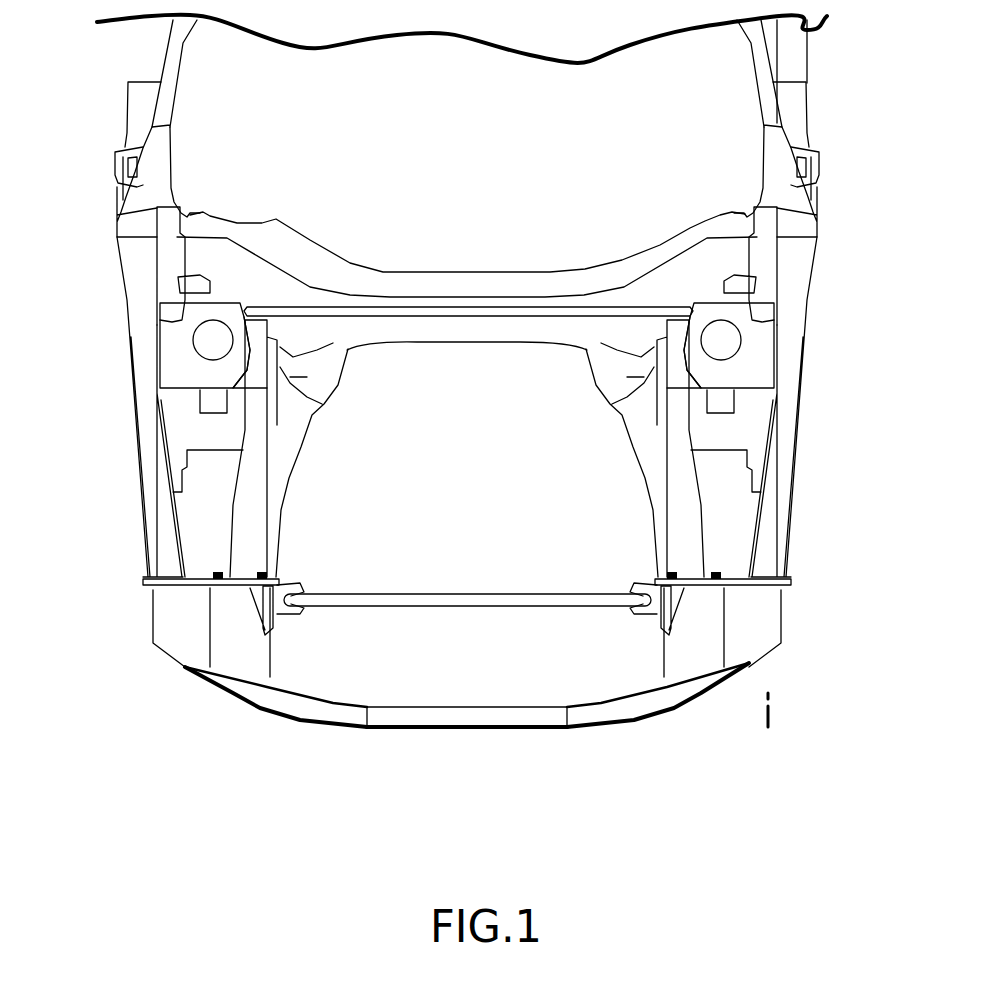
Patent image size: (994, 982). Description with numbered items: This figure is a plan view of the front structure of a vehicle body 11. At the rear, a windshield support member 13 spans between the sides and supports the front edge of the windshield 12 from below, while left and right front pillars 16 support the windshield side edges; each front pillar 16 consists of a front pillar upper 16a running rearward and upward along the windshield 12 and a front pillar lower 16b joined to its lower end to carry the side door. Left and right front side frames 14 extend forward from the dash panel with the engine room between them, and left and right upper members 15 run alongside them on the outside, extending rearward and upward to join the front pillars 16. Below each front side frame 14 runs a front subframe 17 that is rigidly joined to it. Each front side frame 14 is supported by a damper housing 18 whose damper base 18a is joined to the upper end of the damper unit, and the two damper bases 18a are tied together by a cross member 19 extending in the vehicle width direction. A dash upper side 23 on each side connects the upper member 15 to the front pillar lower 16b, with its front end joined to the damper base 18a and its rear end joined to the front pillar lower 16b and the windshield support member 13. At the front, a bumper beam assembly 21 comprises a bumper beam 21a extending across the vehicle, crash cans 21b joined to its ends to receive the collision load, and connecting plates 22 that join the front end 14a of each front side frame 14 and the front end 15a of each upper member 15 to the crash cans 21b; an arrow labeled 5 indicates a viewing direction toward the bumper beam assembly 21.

The vehicle body 11 is at (840, 200).
The windshield 12 is at (700, 173).
The windshield support member 13 is at (580, 263).
The front side frame 14 is at (263, 540).
The front end of front side frame 14a is at (268, 607).
The upper member 15 is at (157, 395).
The front end of upper member 15a is at (153, 590).
The front pillar 16 is at (157, 110).
The front pillar upper 16a is at (183, 88).
The front pillar lower 16b is at (127, 193).
The front subframe 17 is at (302, 455).
The damper housing 18 is at (157, 360).
The damper base 18a is at (230, 318).
The cross member 19 is at (583, 315).
The bumper beam assembly 21 is at (640, 728).
The bumper beam 21a is at (468, 720).
The crash can 21b is at (193, 650).
The connecting plate 22 is at (147, 583).
The dash upper side 23 is at (165, 273).
The section line of FIG. 5 is at (777, 717).